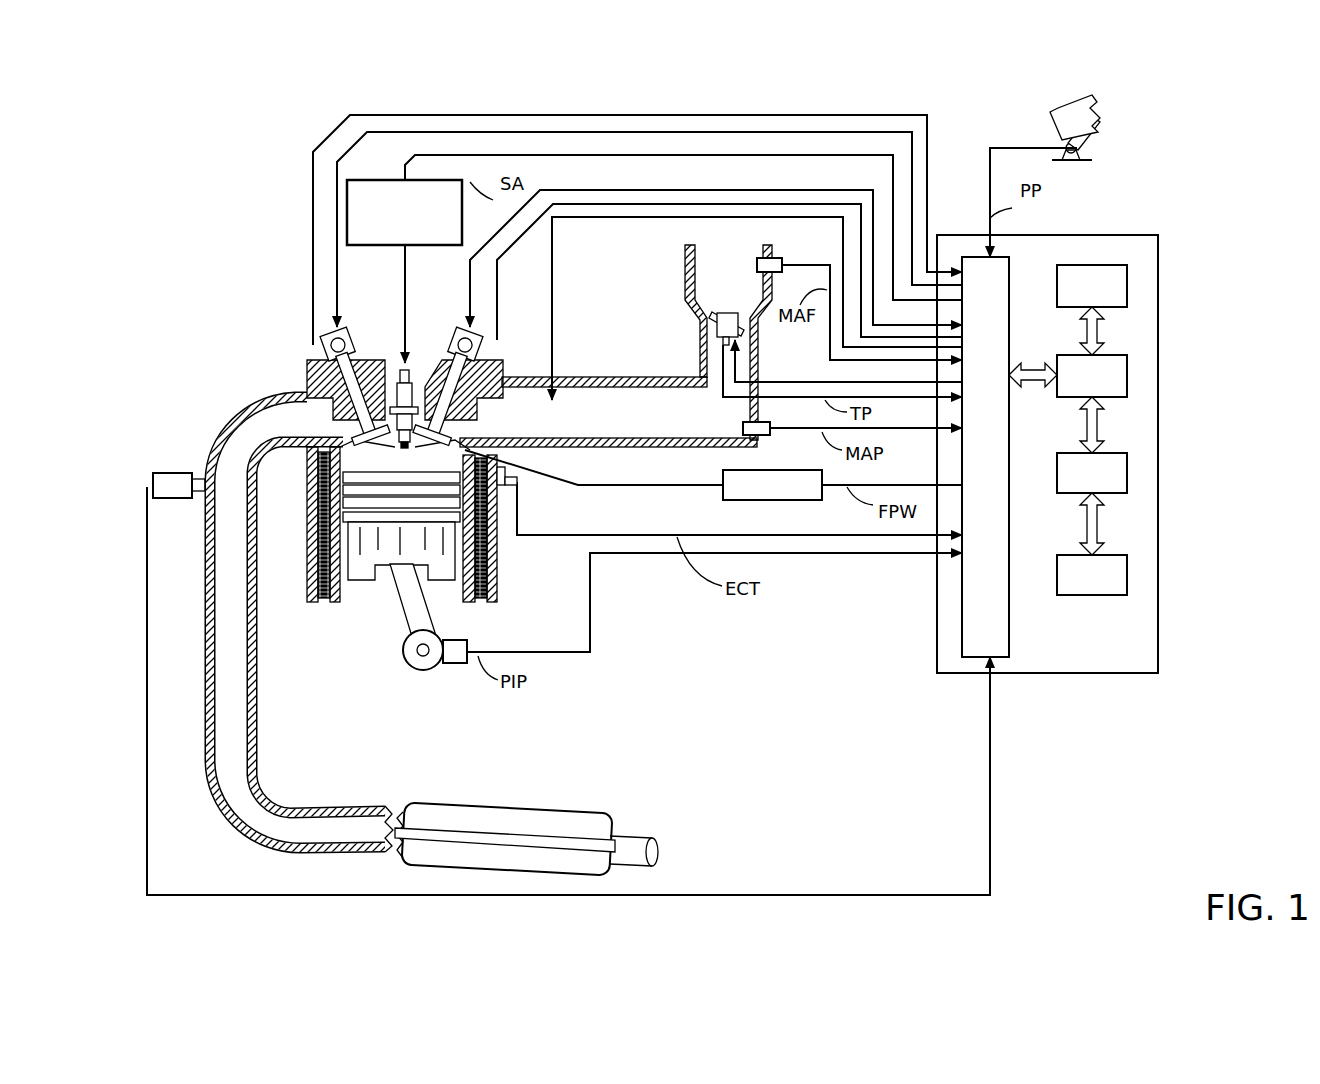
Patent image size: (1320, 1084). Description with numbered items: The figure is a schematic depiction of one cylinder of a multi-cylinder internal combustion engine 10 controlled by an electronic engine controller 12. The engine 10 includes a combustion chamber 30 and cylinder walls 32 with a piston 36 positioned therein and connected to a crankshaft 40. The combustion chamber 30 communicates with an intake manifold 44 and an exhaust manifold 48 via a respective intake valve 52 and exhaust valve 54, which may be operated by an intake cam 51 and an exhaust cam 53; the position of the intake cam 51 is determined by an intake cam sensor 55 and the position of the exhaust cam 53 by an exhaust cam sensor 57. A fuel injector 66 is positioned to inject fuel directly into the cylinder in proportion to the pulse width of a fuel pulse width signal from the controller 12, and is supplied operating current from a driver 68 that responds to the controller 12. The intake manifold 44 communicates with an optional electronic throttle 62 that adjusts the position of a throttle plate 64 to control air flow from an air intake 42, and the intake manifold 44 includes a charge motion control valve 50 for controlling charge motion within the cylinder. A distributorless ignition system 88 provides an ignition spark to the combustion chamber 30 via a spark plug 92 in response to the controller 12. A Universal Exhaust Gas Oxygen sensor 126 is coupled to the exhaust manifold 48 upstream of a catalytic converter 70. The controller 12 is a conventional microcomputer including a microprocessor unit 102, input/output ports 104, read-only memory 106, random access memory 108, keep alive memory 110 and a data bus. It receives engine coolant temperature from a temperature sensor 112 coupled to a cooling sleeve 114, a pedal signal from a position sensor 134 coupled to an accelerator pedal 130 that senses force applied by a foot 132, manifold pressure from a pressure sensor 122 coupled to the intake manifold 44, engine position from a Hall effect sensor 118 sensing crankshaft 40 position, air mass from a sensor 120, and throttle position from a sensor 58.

The internal combustion engine 10 is at (247, 318).
The electronic engine controller 12 is at (1145, 235).
The combustion chamber 30 is at (402, 455).
The cylinder walls 32 is at (347, 590).
The piston 36 is at (387, 550).
The crankshaft 40 is at (413, 667).
The air intake 42 is at (742, 289).
The intake manifold 44 is at (679, 424).
The exhaust manifold 48 is at (289, 428).
The charge motion control valve 50 is at (533, 427).
The intake cam 51 is at (469, 354).
The intake valve 52 is at (445, 422).
The exhaust cam 53 is at (330, 357).
The exhaust valve 54 is at (355, 430).
The intake cam sensor 55 is at (478, 348).
The exhaust cam sensor 57 is at (322, 346).
The throttle position sensor 58 is at (707, 340).
The electronic throttle 62 is at (745, 330).
The throttle plate 64 is at (712, 320).
The fuel injector 66 is at (452, 460).
The driver 68 is at (745, 502).
The catalytic converter 70 is at (410, 803).
The distributorless ignition system 88 is at (363, 180).
The spark plug 92 is at (410, 368).
The microprocessor unit 102 is at (1127, 372).
The input/output ports 104 is at (1010, 265).
The read-only memory 106 is at (1127, 282).
The random access memory 108 is at (1127, 470).
The keep alive memory 110 is at (1127, 573).
The temperature sensor 112 is at (517, 487).
The cooling sleeve 114 is at (483, 555).
The Hall effect sensor 118 is at (448, 665).
The air mass sensor 120 is at (770, 258).
The pressure sensor 122 is at (770, 437).
The Universal Exhaust Gas Oxygen (UEGO) sensor 126 is at (153, 478).
The accelerator pedal 130 is at (1106, 131).
The foot 132 is at (1098, 112).
The position sensor 134 is at (1085, 150).